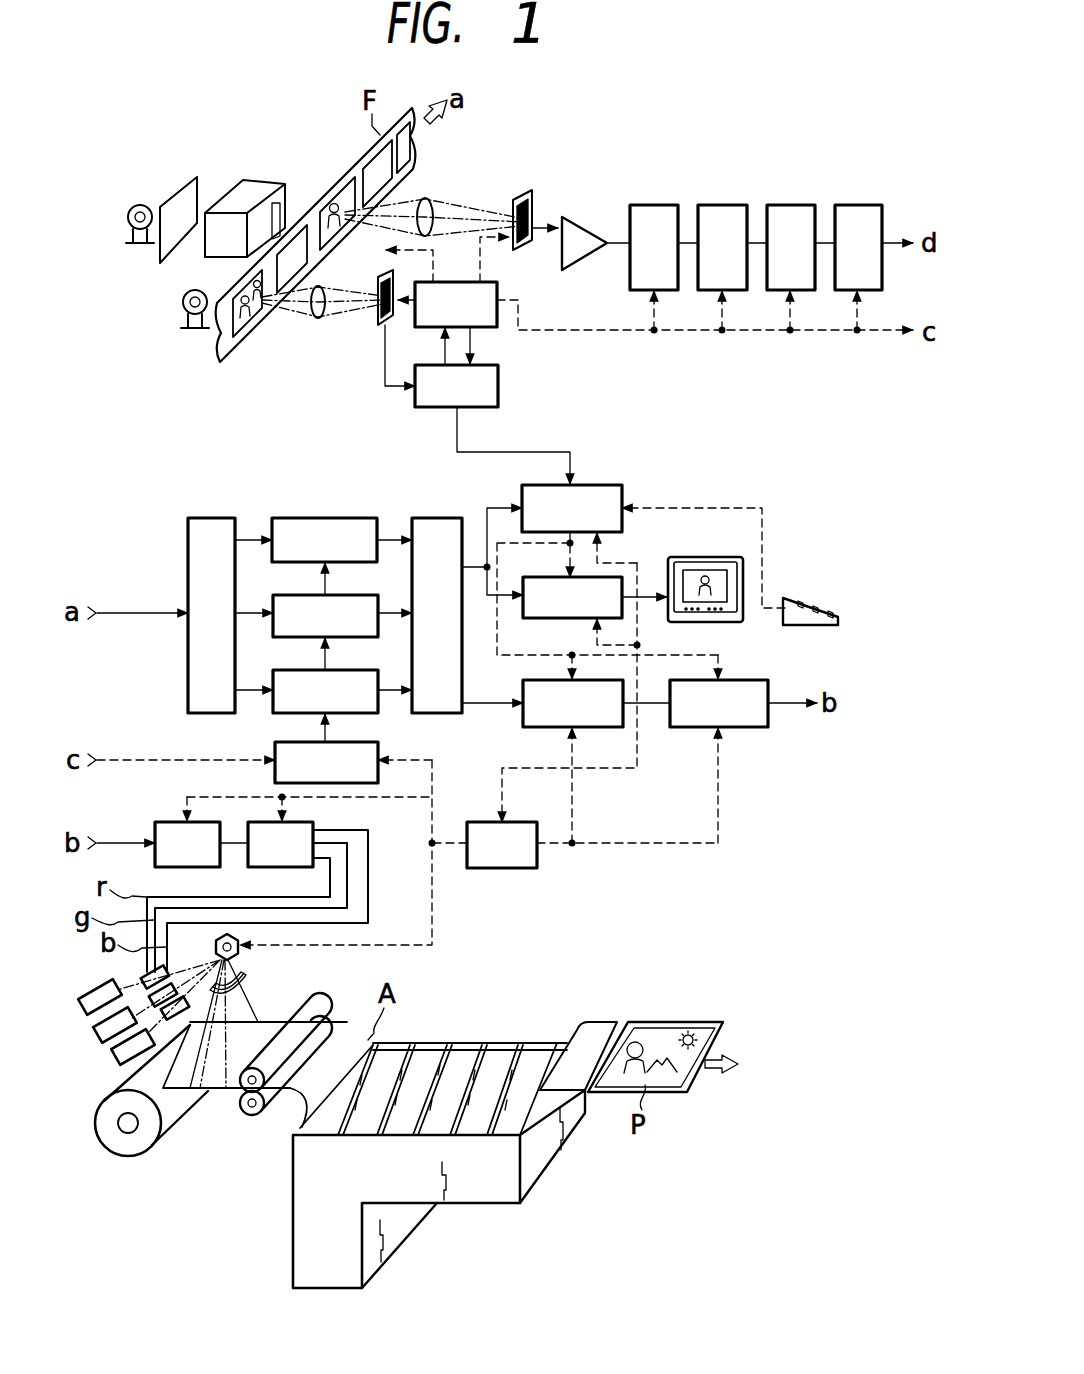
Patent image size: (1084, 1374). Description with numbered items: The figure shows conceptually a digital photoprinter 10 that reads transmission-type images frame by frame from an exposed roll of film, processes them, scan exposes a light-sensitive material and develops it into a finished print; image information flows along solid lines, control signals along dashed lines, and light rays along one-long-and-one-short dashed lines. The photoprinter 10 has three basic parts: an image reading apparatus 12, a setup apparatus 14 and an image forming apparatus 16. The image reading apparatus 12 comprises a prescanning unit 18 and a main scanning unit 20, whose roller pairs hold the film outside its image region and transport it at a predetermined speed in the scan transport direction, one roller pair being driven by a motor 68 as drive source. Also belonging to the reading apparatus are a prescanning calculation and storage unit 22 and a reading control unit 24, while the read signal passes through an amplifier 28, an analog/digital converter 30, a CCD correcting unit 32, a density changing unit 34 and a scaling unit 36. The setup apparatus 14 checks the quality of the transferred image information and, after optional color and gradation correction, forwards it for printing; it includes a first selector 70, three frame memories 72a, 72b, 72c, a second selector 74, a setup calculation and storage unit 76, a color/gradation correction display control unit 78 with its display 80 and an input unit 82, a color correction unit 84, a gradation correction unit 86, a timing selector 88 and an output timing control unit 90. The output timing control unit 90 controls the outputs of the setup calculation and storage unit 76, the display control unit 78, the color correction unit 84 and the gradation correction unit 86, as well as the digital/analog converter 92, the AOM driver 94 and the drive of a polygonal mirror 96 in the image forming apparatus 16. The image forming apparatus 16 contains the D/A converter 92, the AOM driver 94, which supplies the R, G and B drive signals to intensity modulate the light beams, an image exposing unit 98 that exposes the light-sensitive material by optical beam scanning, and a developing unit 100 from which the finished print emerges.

The digital photoprinter 10 is at (764, 162).
The image reading apparatus 12 is at (224, 412).
The setup apparatus 14 is at (769, 481).
The image forming apparatus 16 is at (550, 1010).
The prescanning unit 18 is at (198, 342).
The main scanning unit 20 is at (308, 176).
The prescanning calculation and storage unit 22 is at (442, 400).
The reading control unit 24 is at (442, 318).
The amplifier 28 is at (585, 217).
The analog/digital converter 30 is at (640, 261).
The CCD correcting unit 32 is at (708, 261).
The density changing unit 34 is at (777, 261).
The scaling unit 36 is at (844, 261).
The motor 68 is at (391, 260).
The first selector 70 is at (197, 627).
The frame memory 72a is at (305, 554).
The frame memory 72b is at (305, 630).
The frame memory 72c is at (305, 705).
The second selector 74 is at (423, 627).
The setup calculation and storage unit 76 is at (558, 521).
The color/gradation correction display control unit 78 is at (558, 611).
The display 80 is at (707, 554).
The input unit 82 is at (808, 580).
The color correction unit 84 is at (559, 717).
The gradation correction unit 86 is at (705, 717).
The timing selector 88 is at (312, 776).
The output timing control unit 90 is at (488, 859).
The digital/analog converter 92 is at (174, 859).
The AOM driver 94 is at (267, 859).
The polygonal mirror 96 is at (240, 957).
The image exposing unit 98 is at (208, 1133).
The developing unit 100 is at (502, 1033).